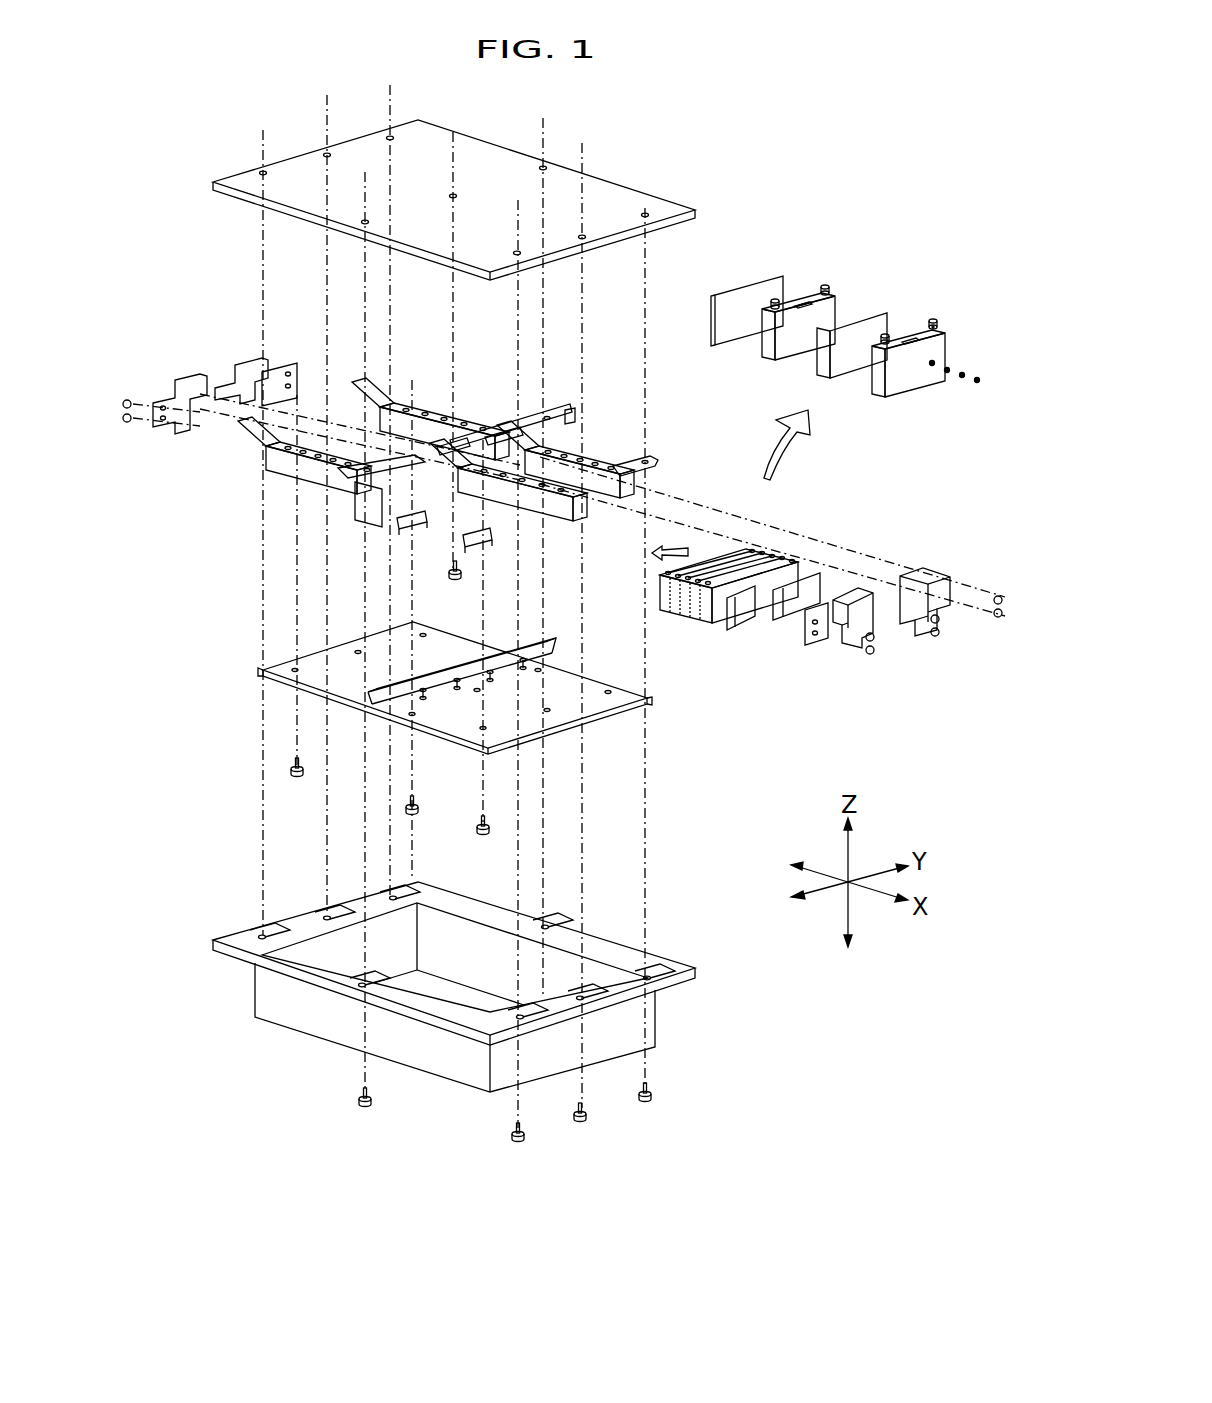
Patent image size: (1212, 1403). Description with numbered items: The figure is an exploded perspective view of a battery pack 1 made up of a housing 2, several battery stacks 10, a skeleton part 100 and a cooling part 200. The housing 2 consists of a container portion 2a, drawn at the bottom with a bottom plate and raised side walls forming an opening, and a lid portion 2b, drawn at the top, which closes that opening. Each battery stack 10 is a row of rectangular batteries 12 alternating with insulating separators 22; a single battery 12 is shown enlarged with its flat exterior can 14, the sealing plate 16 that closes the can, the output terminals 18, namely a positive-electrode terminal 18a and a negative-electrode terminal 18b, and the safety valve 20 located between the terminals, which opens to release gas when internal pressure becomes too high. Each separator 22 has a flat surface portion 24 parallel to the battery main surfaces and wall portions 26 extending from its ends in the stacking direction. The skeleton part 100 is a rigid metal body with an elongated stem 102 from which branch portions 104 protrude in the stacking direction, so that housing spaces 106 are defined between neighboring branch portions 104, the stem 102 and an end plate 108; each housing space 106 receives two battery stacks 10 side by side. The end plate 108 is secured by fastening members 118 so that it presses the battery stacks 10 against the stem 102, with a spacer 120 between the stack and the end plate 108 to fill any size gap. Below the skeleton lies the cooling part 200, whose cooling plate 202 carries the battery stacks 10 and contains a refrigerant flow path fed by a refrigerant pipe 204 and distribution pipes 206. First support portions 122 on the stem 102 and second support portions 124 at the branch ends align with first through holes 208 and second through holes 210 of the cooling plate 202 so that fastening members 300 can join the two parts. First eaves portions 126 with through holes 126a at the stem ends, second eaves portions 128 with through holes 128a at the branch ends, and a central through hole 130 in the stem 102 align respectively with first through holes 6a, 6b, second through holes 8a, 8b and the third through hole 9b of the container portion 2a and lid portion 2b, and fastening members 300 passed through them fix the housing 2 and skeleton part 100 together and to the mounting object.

The battery pack 1 is at (493, 1210).
The housing 2 is at (482, 598).
The container portion 2a is at (482, 980).
The lid portion 2b is at (462, 192).
The first through holes 6a is at (548, 924).
The first through holes 6b is at (544, 168).
The second through holes 8a is at (668, 972).
The second through holes 8b is at (646, 215).
The third through hole 9b is at (455, 195).
The battery stack 10 is at (799, 560).
The battery 12 is at (859, 336).
The exterior can 14 is at (938, 380).
The sealing plate 16 is at (940, 328).
The output terminals 18 is at (885, 309).
The positive-electrode terminal 18a is at (816, 290).
The negative-electrode terminal 18b is at (940, 312).
The safety valve 20 is at (907, 332).
The separator 22 is at (777, 279).
The flat surface portion 24 is at (807, 290).
The wall portions 26 is at (815, 368).
The skeleton part 100 is at (562, 506).
The stem 102 is at (537, 387).
The branch portions 104 is at (628, 470).
The housing spaces 106 is at (598, 512).
The end plate 108 is at (178, 377).
The fastening members 118 is at (866, 655).
The spacer 120 is at (750, 632).
The first support portions 122 is at (427, 531).
The second support portions 124 is at (487, 548).
The first eaves portions 126 is at (568, 427).
The through hole 126a is at (502, 428).
The second eaves portions 128 is at (677, 453).
The through hole 128a is at (656, 462).
The through hole 130 is at (443, 428).
The cooling part 200 is at (404, 701).
The cooling plate 202 is at (273, 662).
The refrigerant pipe 204 is at (548, 657).
The distribution pipes 206 is at (527, 670).
The first through holes 208 is at (413, 718).
The second through holes 210 is at (485, 727).
The fastening members 300 is at (455, 584).